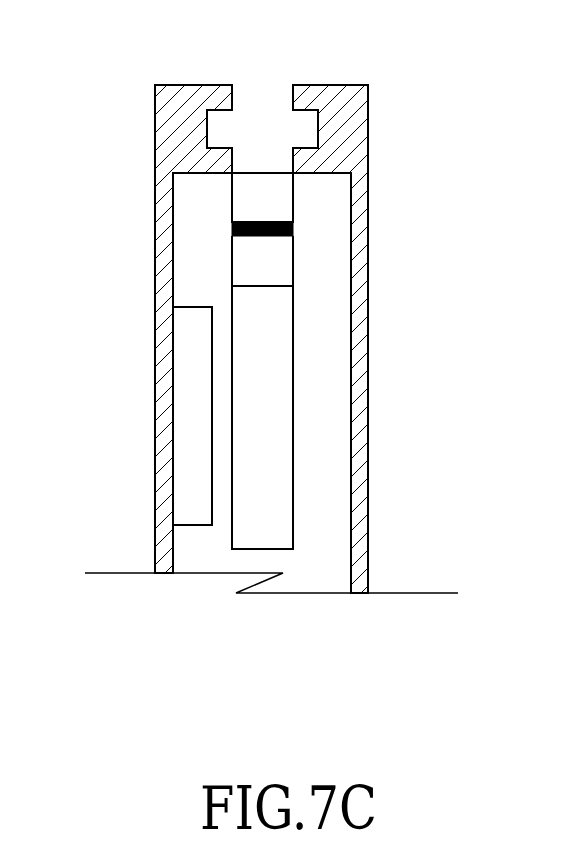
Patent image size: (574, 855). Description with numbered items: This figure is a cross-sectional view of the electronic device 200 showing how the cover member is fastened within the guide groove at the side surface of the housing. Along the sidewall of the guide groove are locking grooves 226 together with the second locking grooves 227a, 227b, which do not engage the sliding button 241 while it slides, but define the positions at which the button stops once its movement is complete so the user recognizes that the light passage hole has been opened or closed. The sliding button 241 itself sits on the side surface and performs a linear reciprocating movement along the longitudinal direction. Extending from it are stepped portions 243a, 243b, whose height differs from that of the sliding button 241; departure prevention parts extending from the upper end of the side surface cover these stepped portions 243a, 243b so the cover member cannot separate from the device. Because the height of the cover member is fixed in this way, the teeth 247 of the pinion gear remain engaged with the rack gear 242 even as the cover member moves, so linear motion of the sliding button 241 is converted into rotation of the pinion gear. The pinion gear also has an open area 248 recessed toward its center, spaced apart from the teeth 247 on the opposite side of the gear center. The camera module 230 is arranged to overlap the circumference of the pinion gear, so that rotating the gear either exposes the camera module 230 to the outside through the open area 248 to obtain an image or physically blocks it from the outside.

The electronic device / pen assembly 200 is at (388, 80).
The housing wall 226 is at (215, 157).
The second locking groove 227a is at (219, 108).
The second locking groove 227b is at (306, 108).
The sliding button 241 is at (262, 85).
The stepped portion 243a is at (209, 123).
The stepped portion 243b is at (315, 124).
The rack gear 242 is at (289, 197).
The teeth 247 is at (289, 259).
The open area 248 is at (289, 422).
The camera module 230 is at (177, 452).